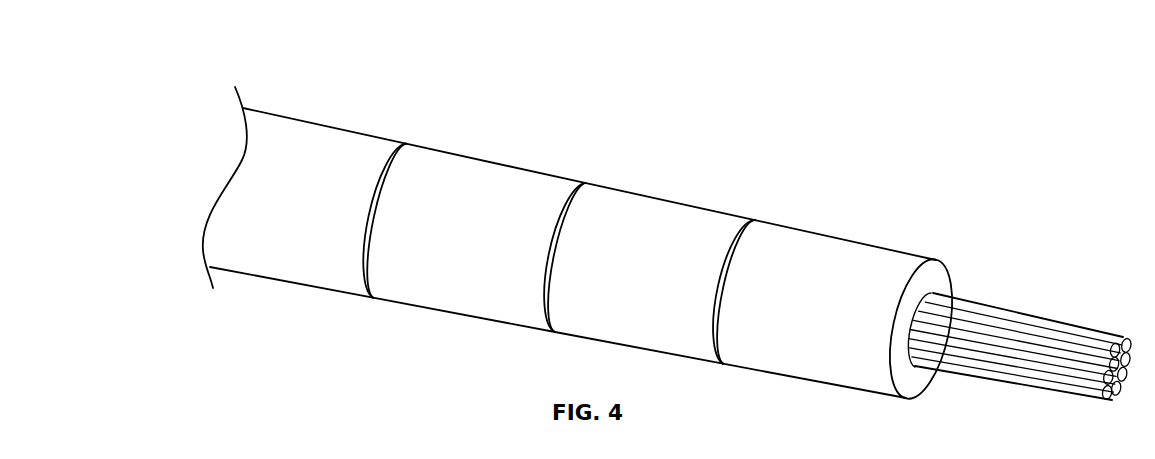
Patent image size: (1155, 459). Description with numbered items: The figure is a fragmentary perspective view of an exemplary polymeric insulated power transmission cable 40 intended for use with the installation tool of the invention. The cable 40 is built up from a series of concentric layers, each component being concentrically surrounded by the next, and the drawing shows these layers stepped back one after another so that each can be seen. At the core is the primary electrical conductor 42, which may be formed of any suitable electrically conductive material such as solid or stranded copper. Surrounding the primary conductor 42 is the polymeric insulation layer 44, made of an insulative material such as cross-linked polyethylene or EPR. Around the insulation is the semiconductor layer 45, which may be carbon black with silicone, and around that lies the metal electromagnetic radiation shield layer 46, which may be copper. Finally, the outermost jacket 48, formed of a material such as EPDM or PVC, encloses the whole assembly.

The cable 40 is at (323, 53).
The primary electrical conductor 42 is at (1015, 325).
The polymeric insulation layer 44 is at (830, 253).
The semiconductor layer 45 is at (647, 215).
The metal electromagnetic radiation shield layer 46 is at (482, 175).
The jacket 48 is at (332, 140).